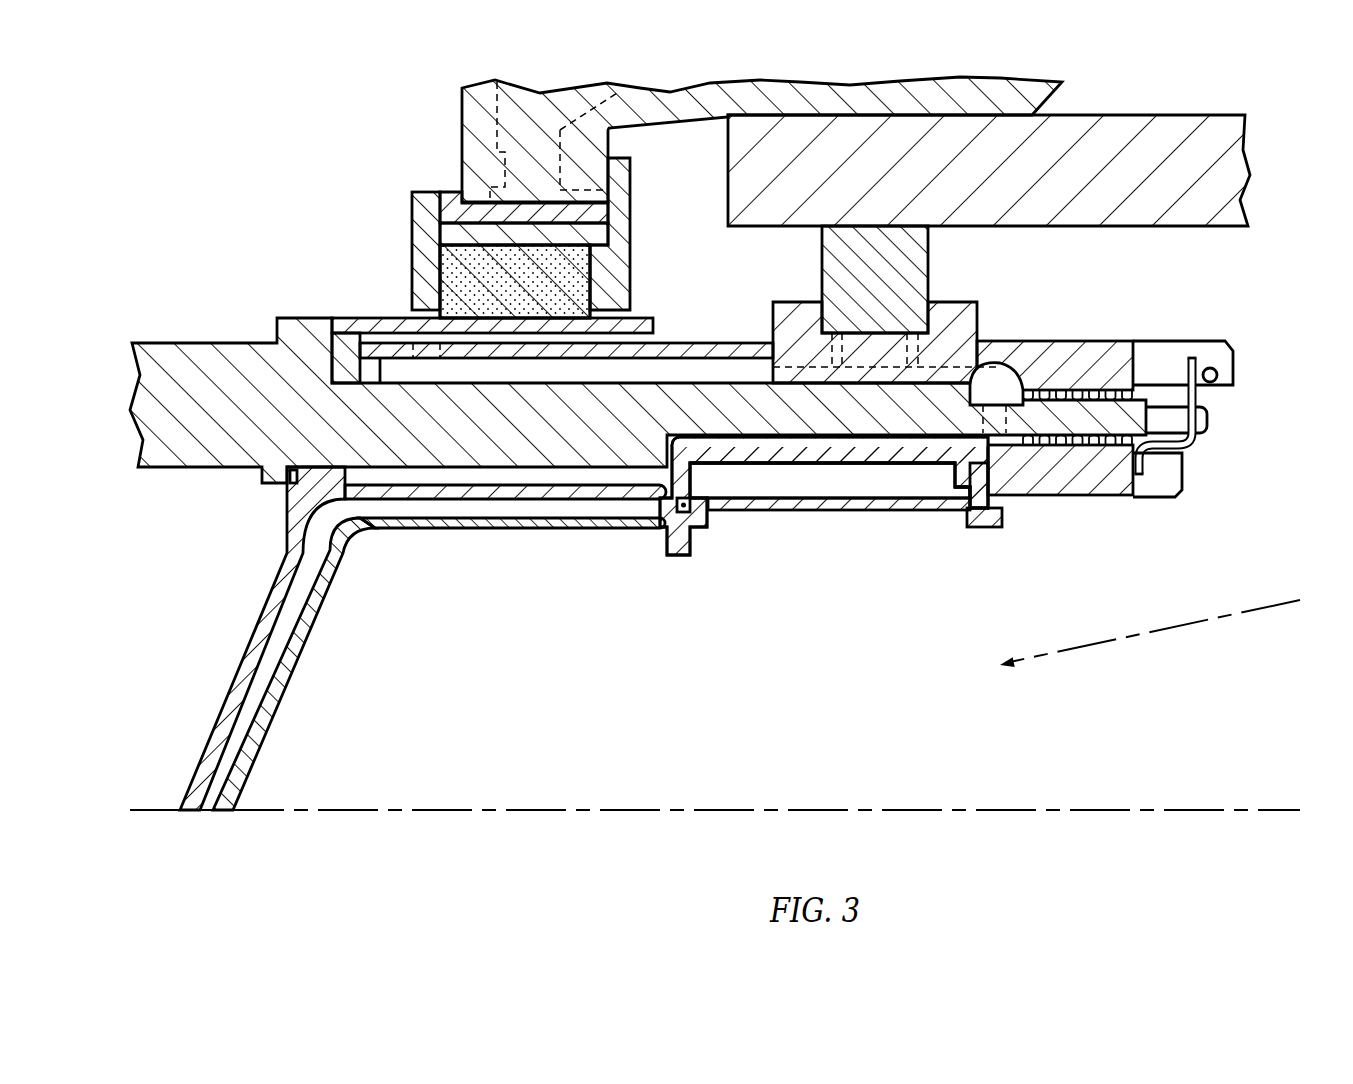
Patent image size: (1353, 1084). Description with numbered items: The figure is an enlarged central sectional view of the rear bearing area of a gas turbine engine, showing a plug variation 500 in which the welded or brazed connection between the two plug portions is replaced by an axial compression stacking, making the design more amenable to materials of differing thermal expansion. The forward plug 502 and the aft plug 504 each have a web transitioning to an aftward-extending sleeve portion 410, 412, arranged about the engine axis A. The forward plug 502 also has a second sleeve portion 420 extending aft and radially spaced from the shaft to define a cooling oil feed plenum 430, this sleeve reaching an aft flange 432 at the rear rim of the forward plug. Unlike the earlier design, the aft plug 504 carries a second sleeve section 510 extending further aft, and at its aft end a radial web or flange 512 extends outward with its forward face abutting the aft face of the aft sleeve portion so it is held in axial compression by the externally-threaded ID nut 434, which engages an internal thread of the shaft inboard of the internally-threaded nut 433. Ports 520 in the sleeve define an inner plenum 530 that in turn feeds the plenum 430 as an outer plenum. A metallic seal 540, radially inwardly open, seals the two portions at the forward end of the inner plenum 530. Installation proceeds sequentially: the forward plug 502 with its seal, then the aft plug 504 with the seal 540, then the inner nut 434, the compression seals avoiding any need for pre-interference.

The sleeve portion 410 is at (540, 492).
The sleeve portion 412 is at (461, 525).
The second sleeve portion 420 is at (907, 462).
The cooling oil feed plenum 430 is at (825, 525).
The aft flange 432 is at (968, 497).
The internally-threaded nut 433 is at (1097, 362).
The externally-threaded nut 434 is at (1083, 470).
The variation 500 is at (382, 638).
The forward plug 502 is at (389, 638).
The aft plug 504 is at (439, 664).
The second sleeve section 510 is at (882, 505).
The radial web or flange 512 is at (1007, 495).
The ports 520 is at (765, 505).
The inner plenum 530 is at (822, 480).
The metallic seal 540 is at (677, 532).
The axis A is at (148, 812).